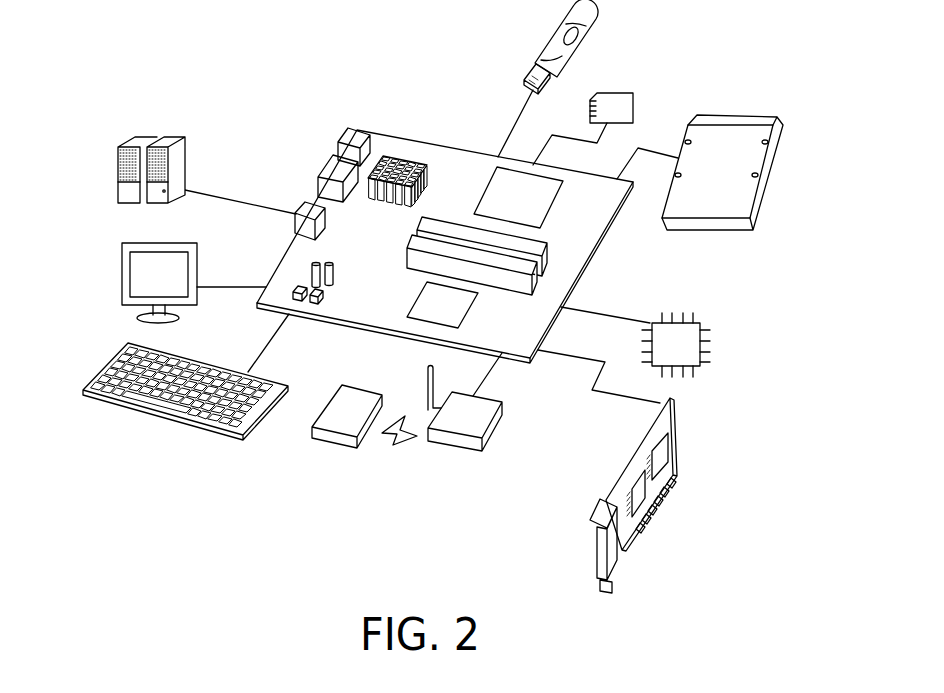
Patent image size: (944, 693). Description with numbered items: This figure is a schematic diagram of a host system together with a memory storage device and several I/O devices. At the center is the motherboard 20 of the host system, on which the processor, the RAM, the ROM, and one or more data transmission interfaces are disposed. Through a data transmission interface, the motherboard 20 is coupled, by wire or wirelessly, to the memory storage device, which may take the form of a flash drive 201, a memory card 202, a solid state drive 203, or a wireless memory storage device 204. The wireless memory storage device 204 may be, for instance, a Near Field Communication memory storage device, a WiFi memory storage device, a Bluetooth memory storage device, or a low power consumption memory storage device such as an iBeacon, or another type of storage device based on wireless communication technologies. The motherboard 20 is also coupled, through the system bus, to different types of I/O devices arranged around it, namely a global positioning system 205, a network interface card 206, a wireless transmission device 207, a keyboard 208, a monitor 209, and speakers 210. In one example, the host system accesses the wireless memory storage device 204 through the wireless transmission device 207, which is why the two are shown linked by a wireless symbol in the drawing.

The motherboard 20 is at (445, 165).
The flash drive 201 is at (552, 35).
The memory card 202 is at (635, 97).
The solid state drive 203 is at (737, 110).
The wireless memory storage device 204 is at (327, 397).
The global positioning system 205 is at (710, 345).
The network interface card 206 is at (675, 450).
The wireless transmission device 207 is at (495, 435).
The keyboard 208 is at (190, 423).
The monitor 209 is at (120, 290).
The speakers 210 is at (118, 192).